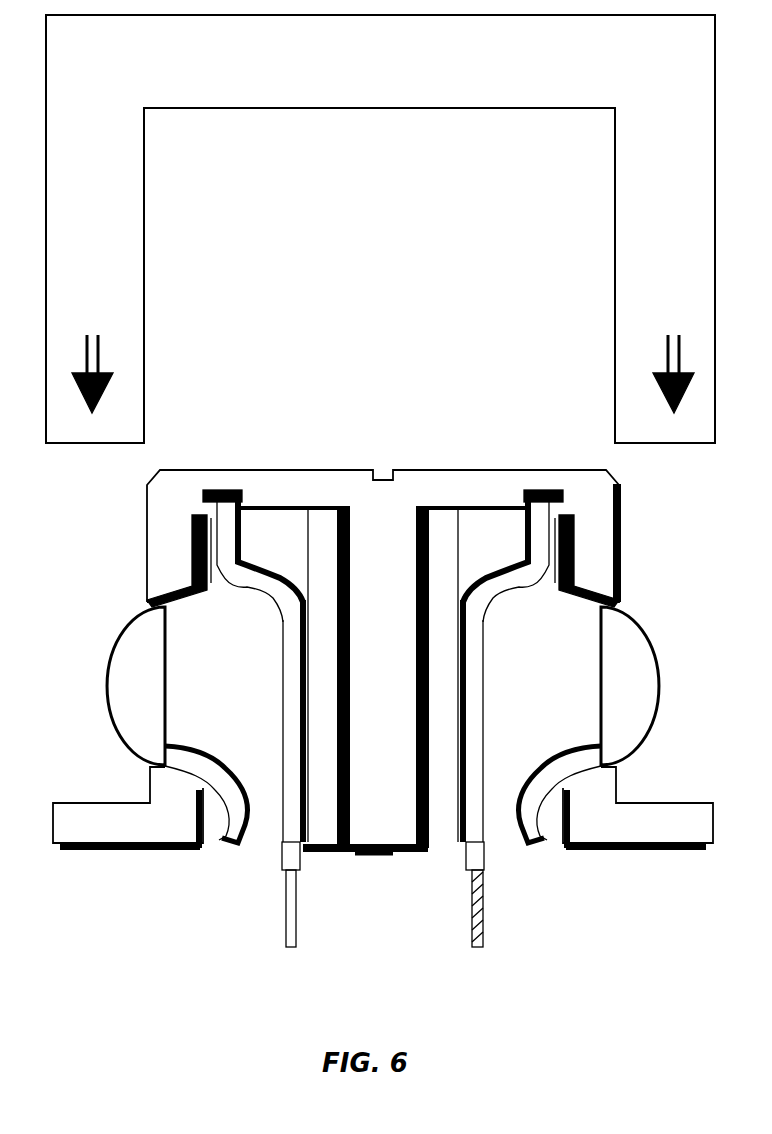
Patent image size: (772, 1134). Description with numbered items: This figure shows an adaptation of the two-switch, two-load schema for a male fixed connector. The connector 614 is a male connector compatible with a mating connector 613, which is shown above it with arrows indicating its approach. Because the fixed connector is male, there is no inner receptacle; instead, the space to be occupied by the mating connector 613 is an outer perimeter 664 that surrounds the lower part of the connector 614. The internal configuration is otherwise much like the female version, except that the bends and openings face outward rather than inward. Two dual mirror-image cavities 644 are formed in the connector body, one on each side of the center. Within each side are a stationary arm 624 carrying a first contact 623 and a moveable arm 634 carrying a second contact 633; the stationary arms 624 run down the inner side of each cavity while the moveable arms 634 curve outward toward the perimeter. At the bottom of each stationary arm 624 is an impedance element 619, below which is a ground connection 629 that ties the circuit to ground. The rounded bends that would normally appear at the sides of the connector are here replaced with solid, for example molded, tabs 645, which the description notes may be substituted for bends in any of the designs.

The mating connector 613 is at (380, 229).
The connector 614 is at (383, 661).
The cavities 644 is at (383, 675).
The tabs 645 is at (383, 686).
The outer perimeter 664 is at (383, 807).
The second contacts 633 is at (198, 510).
The first contacts 623 is at (197, 533).
The stationary arms 624 is at (275, 643).
The moveable arms 634 is at (222, 764).
The impedance elements 619 is at (580, 926).
The ground connections 629 is at (550, 1023).